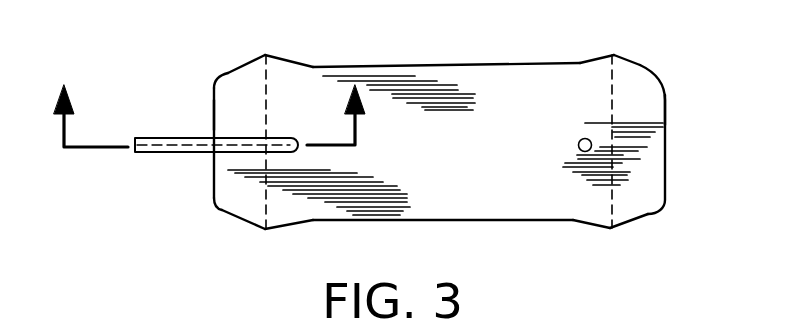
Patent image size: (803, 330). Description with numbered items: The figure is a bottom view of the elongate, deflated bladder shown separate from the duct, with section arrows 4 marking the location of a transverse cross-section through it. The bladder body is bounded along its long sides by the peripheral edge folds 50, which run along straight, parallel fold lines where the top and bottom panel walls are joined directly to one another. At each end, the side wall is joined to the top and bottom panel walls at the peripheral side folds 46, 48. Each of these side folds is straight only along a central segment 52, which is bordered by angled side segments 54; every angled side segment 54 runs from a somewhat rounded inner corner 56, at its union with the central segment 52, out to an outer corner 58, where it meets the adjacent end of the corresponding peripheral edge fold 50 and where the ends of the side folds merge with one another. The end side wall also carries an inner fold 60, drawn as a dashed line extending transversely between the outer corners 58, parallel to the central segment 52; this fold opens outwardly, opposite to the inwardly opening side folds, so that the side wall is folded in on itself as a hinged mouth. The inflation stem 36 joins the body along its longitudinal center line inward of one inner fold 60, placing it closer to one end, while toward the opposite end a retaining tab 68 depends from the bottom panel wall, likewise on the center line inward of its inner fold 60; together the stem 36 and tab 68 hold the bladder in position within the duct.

The section line 4- 4 is at (206, 111).
The inflation stem 36 is at (175, 153).
The peripheral side fold 46 is at (407, 89).
The peripheral side fold 48 is at (214, 115).
The peripheral edge fold 50 is at (390, 65).
The central segment 52 is at (213, 182).
The angled side segment 54 is at (239, 70).
The rounded corner 56 is at (214, 86).
The outer corner 58 is at (266, 55).
The inner fold 60 is at (268, 115).
The retaining tab 68 is at (580, 150).